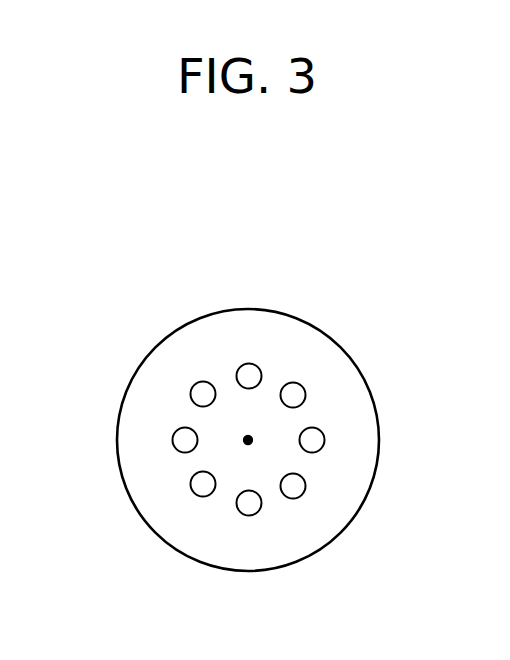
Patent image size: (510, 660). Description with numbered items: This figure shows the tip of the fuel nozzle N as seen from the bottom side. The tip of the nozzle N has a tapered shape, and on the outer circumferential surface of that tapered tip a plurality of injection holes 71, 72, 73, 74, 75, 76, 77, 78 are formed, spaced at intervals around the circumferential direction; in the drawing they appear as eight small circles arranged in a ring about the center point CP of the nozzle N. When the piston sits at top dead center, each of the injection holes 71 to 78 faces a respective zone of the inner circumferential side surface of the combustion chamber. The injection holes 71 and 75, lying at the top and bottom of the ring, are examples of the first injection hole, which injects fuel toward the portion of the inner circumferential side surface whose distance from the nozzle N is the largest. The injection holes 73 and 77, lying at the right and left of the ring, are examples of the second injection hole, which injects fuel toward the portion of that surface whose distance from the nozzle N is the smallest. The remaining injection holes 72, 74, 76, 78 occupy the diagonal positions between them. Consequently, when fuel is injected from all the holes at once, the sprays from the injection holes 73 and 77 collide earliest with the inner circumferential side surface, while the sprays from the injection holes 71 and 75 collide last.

The nozzle N is at (360, 367).
The center point of nozzle CP is at (246, 432).
The injection hole 71 is at (249, 372).
The injection hole 72 is at (293, 393).
The injection hole 73 is at (313, 437).
The injection hole 74 is at (293, 486).
The injection hole 75 is at (245, 508).
The injection hole 76 is at (200, 485).
The injection hole 77 is at (183, 442).
The injection hole 78 is at (207, 396).